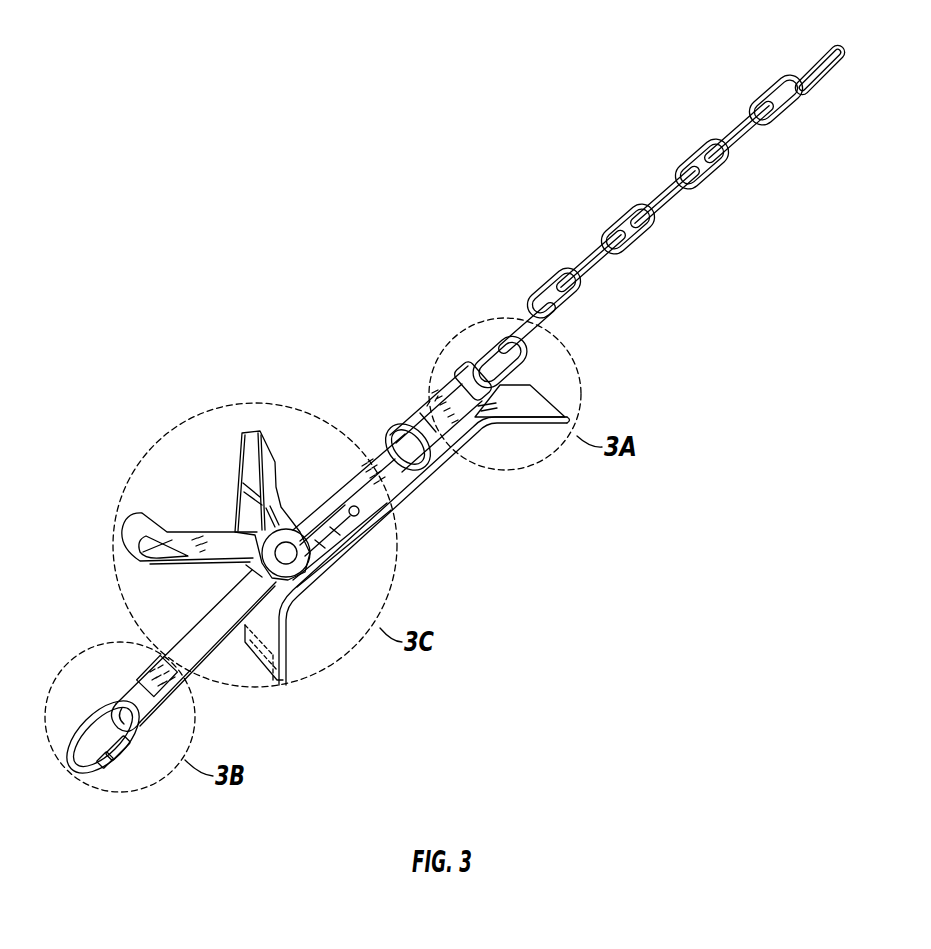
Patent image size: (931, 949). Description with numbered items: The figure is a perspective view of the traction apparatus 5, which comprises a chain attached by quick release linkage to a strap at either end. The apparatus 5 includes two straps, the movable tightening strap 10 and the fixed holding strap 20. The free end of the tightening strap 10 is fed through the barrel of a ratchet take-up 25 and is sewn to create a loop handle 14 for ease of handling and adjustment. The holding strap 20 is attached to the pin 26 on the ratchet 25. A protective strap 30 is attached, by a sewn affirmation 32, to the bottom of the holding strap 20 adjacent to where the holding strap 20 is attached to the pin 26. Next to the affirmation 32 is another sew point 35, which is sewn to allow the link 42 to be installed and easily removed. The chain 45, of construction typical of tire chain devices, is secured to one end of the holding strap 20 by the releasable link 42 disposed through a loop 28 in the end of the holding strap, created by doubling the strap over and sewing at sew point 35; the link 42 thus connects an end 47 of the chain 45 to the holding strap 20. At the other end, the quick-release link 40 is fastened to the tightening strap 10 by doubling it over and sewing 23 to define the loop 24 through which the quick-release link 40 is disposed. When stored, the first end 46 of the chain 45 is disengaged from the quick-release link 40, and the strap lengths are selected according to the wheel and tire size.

The apparatus 5 is at (358, 262).
The tightening strap 10 is at (213, 617).
The loop handle 14 is at (132, 527).
The holding strap 20 is at (363, 467).
The sewing 23 is at (140, 670).
The loop 24 is at (121, 695).
The ratchet take-up 25 is at (243, 435).
The pin 26 is at (357, 512).
The loop 28 is at (468, 378).
The protective strap 30 is at (543, 400).
The sewn affirmation 32 is at (437, 442).
The sew point 35 is at (443, 397).
The quick-release link 40 is at (105, 760).
The releasable link 42 is at (480, 350).
The chain 45 is at (699, 153).
The first end of the chain 46 is at (836, 52).
The end of the chain 47 is at (563, 281).